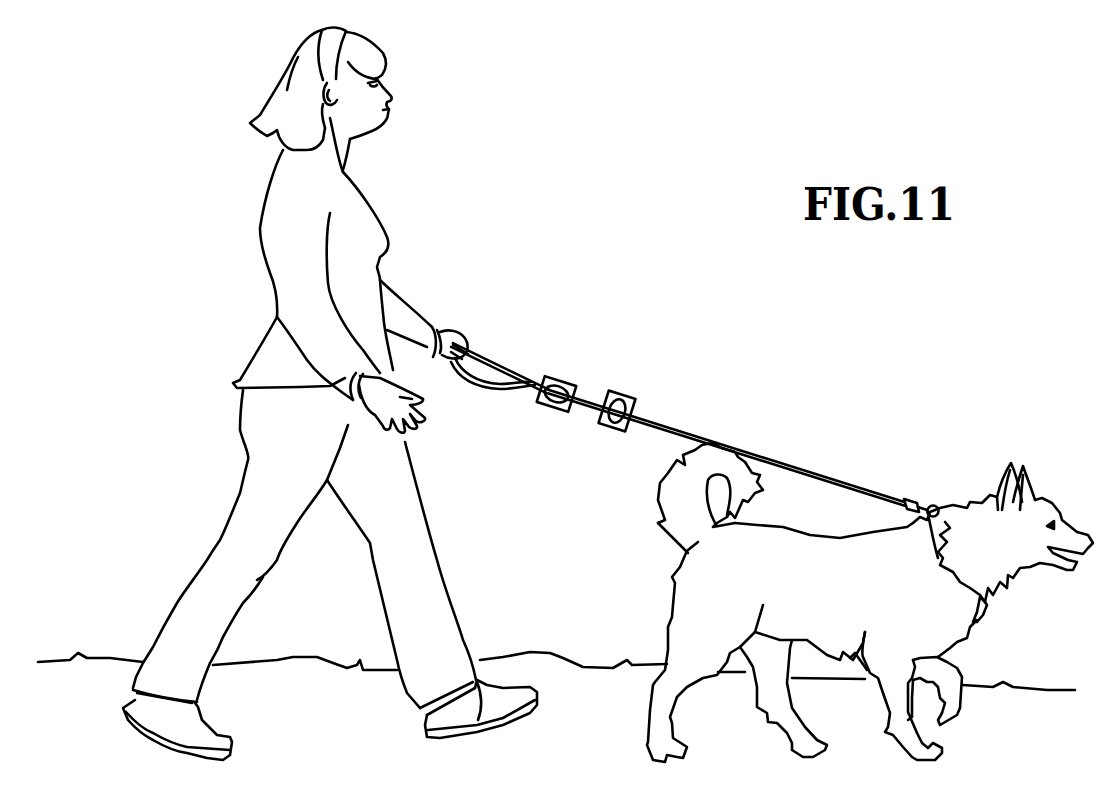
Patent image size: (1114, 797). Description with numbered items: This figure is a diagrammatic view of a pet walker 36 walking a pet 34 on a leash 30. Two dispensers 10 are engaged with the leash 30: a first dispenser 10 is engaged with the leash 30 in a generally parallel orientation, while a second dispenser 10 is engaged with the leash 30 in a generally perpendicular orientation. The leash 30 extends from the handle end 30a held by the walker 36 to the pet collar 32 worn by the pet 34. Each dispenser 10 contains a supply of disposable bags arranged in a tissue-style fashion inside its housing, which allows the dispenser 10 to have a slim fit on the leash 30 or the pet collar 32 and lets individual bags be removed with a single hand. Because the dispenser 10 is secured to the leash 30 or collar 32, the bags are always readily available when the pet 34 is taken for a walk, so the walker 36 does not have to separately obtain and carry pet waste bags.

The dispenser 10 is at (565, 365).
The leash 30 is at (809, 470).
The leash handle 30a is at (484, 360).
The pet collar 32 is at (934, 520).
The pet 34 is at (891, 585).
The pet walker 36 is at (313, 198).